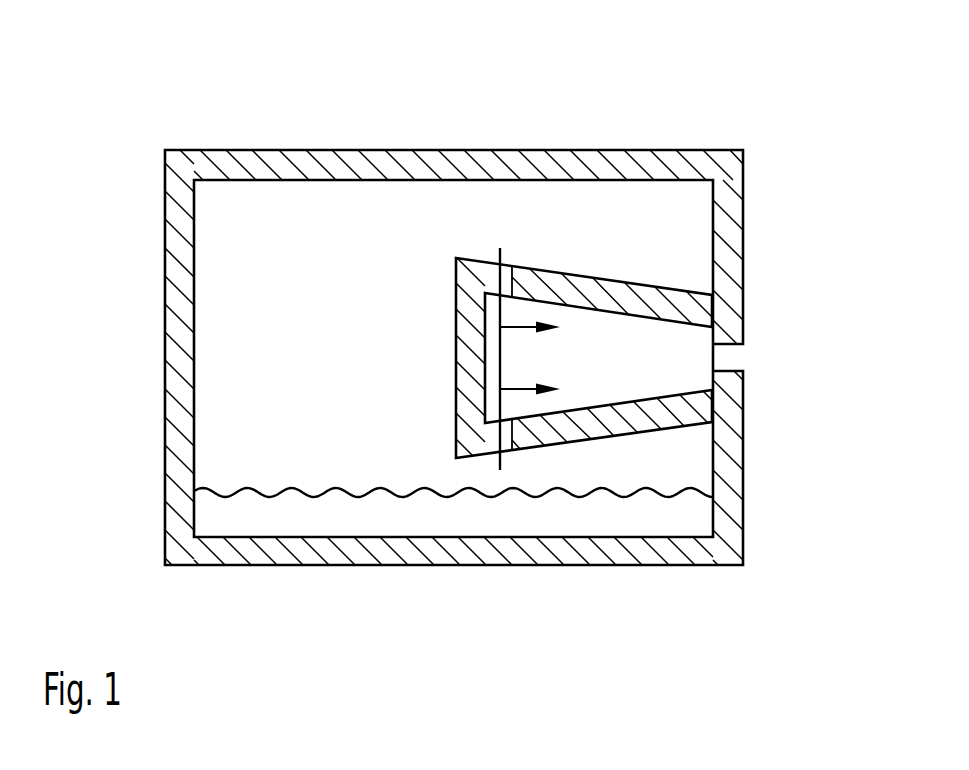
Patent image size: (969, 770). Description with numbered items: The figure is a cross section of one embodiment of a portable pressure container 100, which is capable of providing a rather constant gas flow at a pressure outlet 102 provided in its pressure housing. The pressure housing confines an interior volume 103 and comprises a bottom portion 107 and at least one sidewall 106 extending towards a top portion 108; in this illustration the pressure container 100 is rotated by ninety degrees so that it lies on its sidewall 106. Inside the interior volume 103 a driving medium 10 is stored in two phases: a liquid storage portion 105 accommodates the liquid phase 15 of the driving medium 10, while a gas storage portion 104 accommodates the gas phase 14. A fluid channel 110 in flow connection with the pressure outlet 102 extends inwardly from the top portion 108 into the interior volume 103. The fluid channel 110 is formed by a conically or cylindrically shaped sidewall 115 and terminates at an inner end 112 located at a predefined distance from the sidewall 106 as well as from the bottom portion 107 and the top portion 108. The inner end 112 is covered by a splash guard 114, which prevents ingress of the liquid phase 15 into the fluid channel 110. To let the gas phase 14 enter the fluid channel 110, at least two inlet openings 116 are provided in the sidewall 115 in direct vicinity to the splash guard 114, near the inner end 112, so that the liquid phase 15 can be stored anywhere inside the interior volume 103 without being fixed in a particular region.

The pressure container 100 is at (187, 76).
The driving medium 10 is at (324, 212).
The gas storage portion 104 is at (255, 200).
The sidewall 106 is at (405, 163).
The inner end 112 is at (471, 227).
The inlet opening 116 is at (507, 275).
The sidewall of the fluid channel 115 is at (587, 285).
The fluid channel 110 is at (630, 345).
The pressure outlet 102 is at (801, 343).
The bottom portion 107 is at (180, 245).
The interior volume 103 is at (246, 341).
The gas phase 14 is at (233, 428).
The top portion 108 is at (728, 460).
The liquid storage portion 105 is at (290, 492).
The liquid phase 15 is at (432, 515).
The splash guard 114 is at (472, 287).